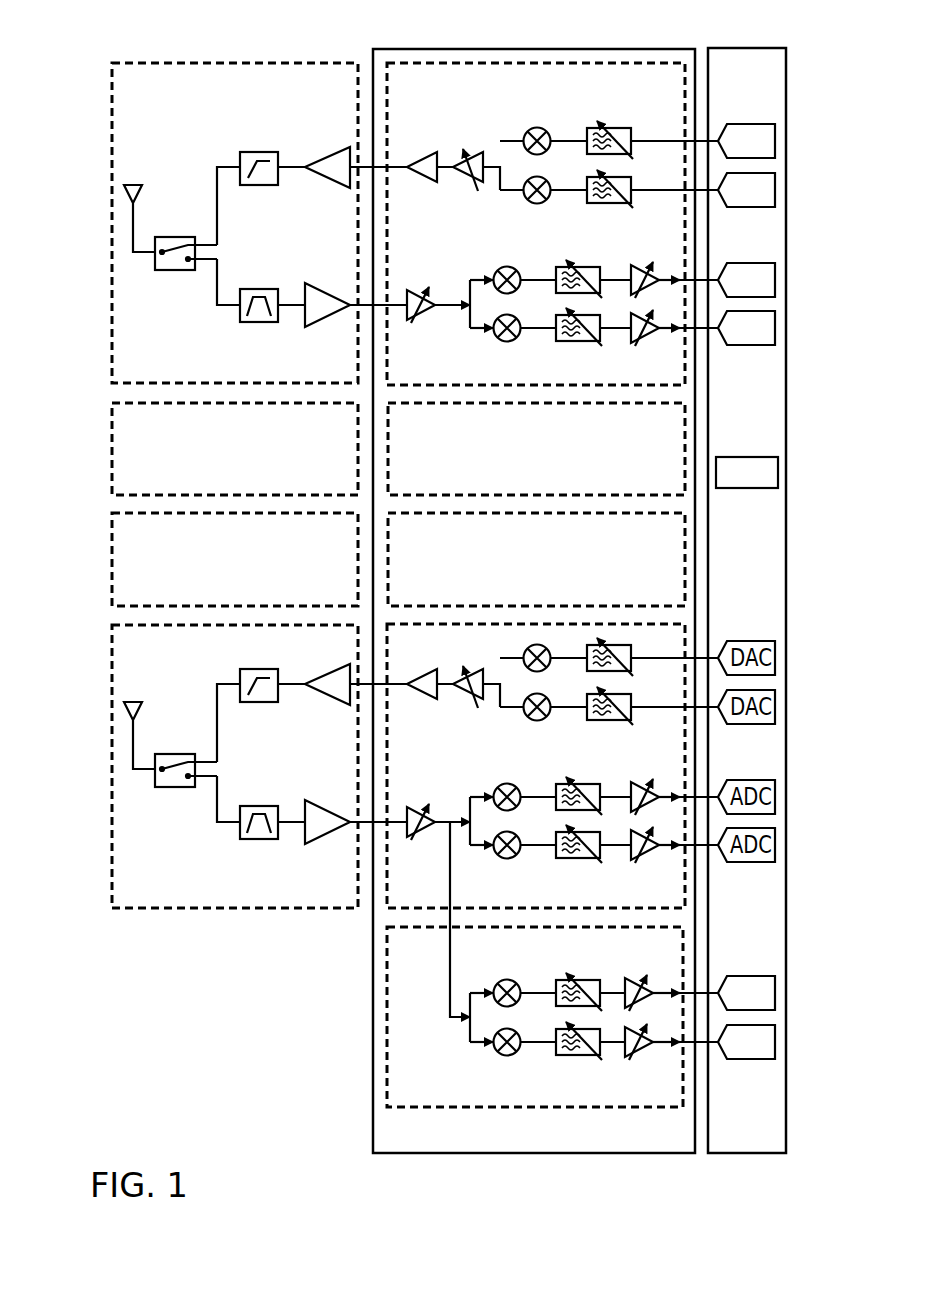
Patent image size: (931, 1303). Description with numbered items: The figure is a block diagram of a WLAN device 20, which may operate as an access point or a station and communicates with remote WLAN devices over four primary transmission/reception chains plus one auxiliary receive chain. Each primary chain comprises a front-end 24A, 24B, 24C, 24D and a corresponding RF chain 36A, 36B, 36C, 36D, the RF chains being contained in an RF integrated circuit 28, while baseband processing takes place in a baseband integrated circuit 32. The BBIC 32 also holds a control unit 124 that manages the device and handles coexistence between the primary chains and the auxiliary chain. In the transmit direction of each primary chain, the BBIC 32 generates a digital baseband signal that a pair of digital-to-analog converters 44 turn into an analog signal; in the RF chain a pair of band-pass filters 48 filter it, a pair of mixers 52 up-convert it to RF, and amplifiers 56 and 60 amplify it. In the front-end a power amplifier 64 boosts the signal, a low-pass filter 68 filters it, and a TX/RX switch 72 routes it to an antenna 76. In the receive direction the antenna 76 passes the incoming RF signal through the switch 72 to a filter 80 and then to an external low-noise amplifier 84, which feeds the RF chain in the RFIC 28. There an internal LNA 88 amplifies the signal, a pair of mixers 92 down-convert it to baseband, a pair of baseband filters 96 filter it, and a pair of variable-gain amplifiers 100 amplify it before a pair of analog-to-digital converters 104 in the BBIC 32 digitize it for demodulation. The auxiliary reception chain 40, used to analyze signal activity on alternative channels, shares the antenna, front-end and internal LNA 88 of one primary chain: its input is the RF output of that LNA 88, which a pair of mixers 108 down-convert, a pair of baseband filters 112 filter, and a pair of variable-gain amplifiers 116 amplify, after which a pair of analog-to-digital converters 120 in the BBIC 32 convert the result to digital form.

The WLAN device 20 is at (102, 38).
The front-end 24A is at (112, 254).
The front-end 24B is at (112, 452).
The front-end 24C is at (112, 559).
The front-end 24D is at (112, 772).
The RF Integrated Circuit 28 is at (373, 1077).
The Baseband Integrated Circuit 32 is at (747, 1155).
The RF chain 36A is at (439, 371).
The RF chain 36B is at (439, 435).
The RF chain 36C is at (439, 543).
The RF chain 36D is at (439, 656).
The auxiliary reception chain 40 is at (387, 1022).
The Digital to Analog Converters 44 is at (776, 145).
The Band-Pass Filters 48 is at (614, 126).
The mixers 52 is at (532, 128).
The amplifier 56 is at (470, 190).
The amplifier 60 is at (415, 154).
The Power Amplifier 64 is at (322, 149).
The Low-Pass Filter 68 is at (251, 151).
The TX/RX switch 72 is at (172, 236).
The antenna 76 is at (134, 184).
The filter 80 is at (258, 287).
The Low-Noise Amplifier 84 is at (325, 283).
The internal LNA 88 is at (409, 288).
The mixers 92 is at (520, 268).
The baseband filters 96 is at (580, 341).
The Variable-Gain Amplifiers 100 is at (650, 341).
The Analog-to-Digital Converters 104 is at (776, 283).
The mixers 108 is at (503, 978).
The baseband filters 112 is at (576, 1056).
The Variable-Gain Amplifiers 116 is at (628, 978).
The Analog-to-Digital Converters 120 is at (776, 995).
The control unit 124 is at (778, 473).